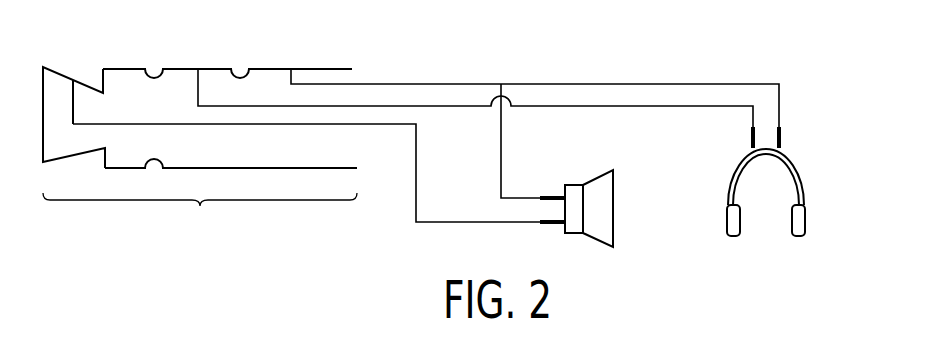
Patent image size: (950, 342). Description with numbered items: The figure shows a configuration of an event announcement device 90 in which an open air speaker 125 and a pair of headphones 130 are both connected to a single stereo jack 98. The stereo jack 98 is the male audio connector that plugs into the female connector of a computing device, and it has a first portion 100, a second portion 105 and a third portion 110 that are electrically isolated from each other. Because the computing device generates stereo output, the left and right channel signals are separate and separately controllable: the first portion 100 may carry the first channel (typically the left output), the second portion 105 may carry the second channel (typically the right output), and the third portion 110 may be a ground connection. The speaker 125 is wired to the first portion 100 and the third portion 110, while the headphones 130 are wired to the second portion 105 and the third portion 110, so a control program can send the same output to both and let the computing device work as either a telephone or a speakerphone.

The event announcement device 90 is at (524, 55).
The single stereo jack 98 is at (200, 217).
The first portion 100 is at (80, 73).
The second portion 105 is at (198, 68).
The third portion 110 is at (292, 68).
The open air speaker 125 is at (588, 183).
The pair of headphones 130 is at (795, 168).